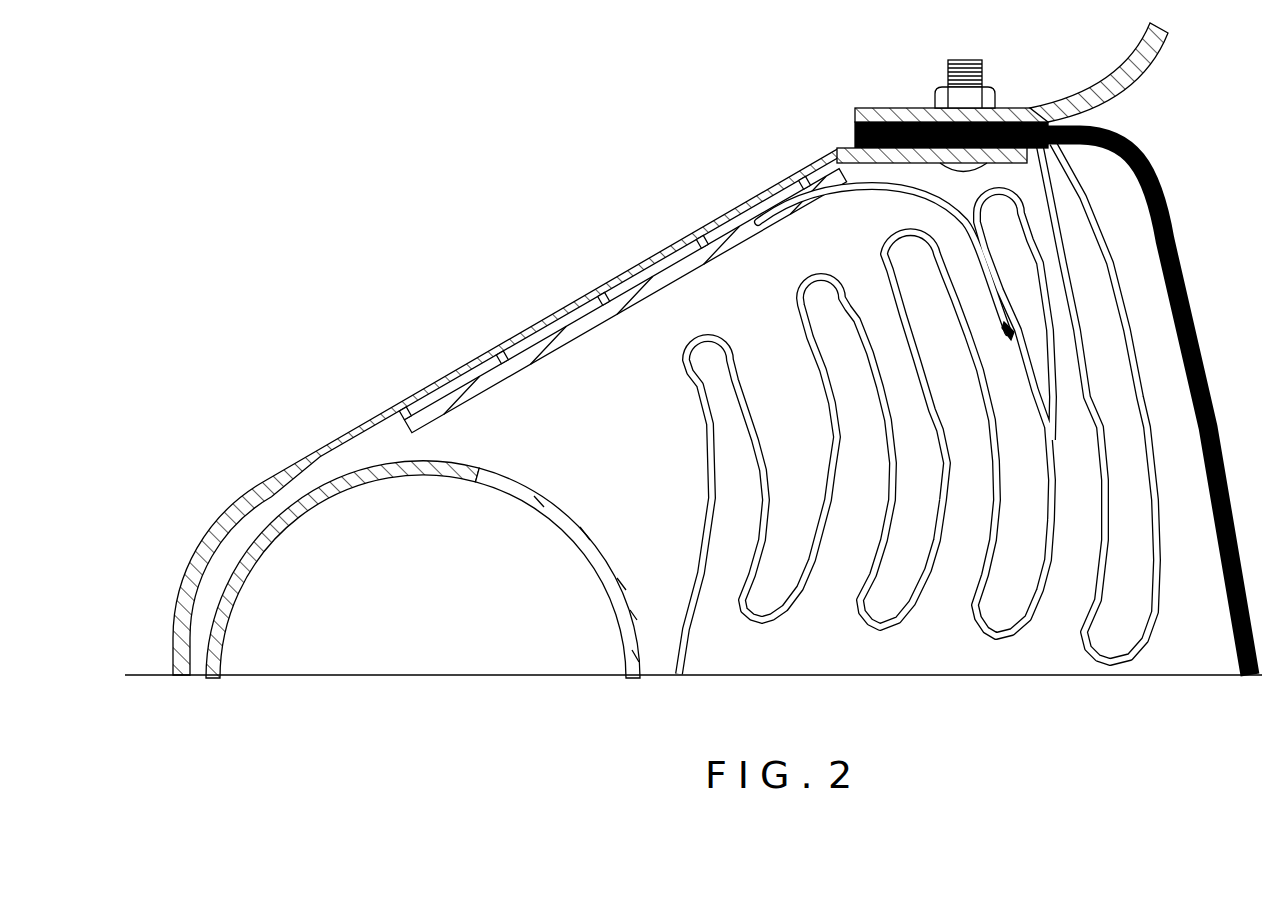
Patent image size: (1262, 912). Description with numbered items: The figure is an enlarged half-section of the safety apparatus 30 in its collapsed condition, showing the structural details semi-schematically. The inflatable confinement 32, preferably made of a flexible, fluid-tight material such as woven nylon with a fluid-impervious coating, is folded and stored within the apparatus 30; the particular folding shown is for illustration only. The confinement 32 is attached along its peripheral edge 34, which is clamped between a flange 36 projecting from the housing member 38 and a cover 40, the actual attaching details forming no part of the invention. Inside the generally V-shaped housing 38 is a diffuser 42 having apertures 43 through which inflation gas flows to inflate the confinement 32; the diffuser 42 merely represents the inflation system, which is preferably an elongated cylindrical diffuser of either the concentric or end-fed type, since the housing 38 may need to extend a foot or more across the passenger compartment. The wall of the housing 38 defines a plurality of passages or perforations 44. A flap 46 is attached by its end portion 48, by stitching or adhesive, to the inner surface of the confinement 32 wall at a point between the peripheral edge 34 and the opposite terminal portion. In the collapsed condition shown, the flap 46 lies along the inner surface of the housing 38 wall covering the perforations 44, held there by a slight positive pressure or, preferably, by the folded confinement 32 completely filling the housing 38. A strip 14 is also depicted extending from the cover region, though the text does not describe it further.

The mounting flange strip 14 is at (1123, 63).
The safety apparatus 30 is at (493, 337).
The inflatable confinement 32 is at (707, 530).
The peripheral edge 34 is at (1068, 150).
The flange 36 is at (915, 167).
The housing member 38 is at (765, 200).
The cover 40 is at (1176, 215).
The diffuser 42 is at (500, 472).
The apertures 43 is at (587, 538).
The passages or perforations 44 is at (705, 238).
The flap 46 is at (880, 193).
The end portion 48 is at (998, 284).